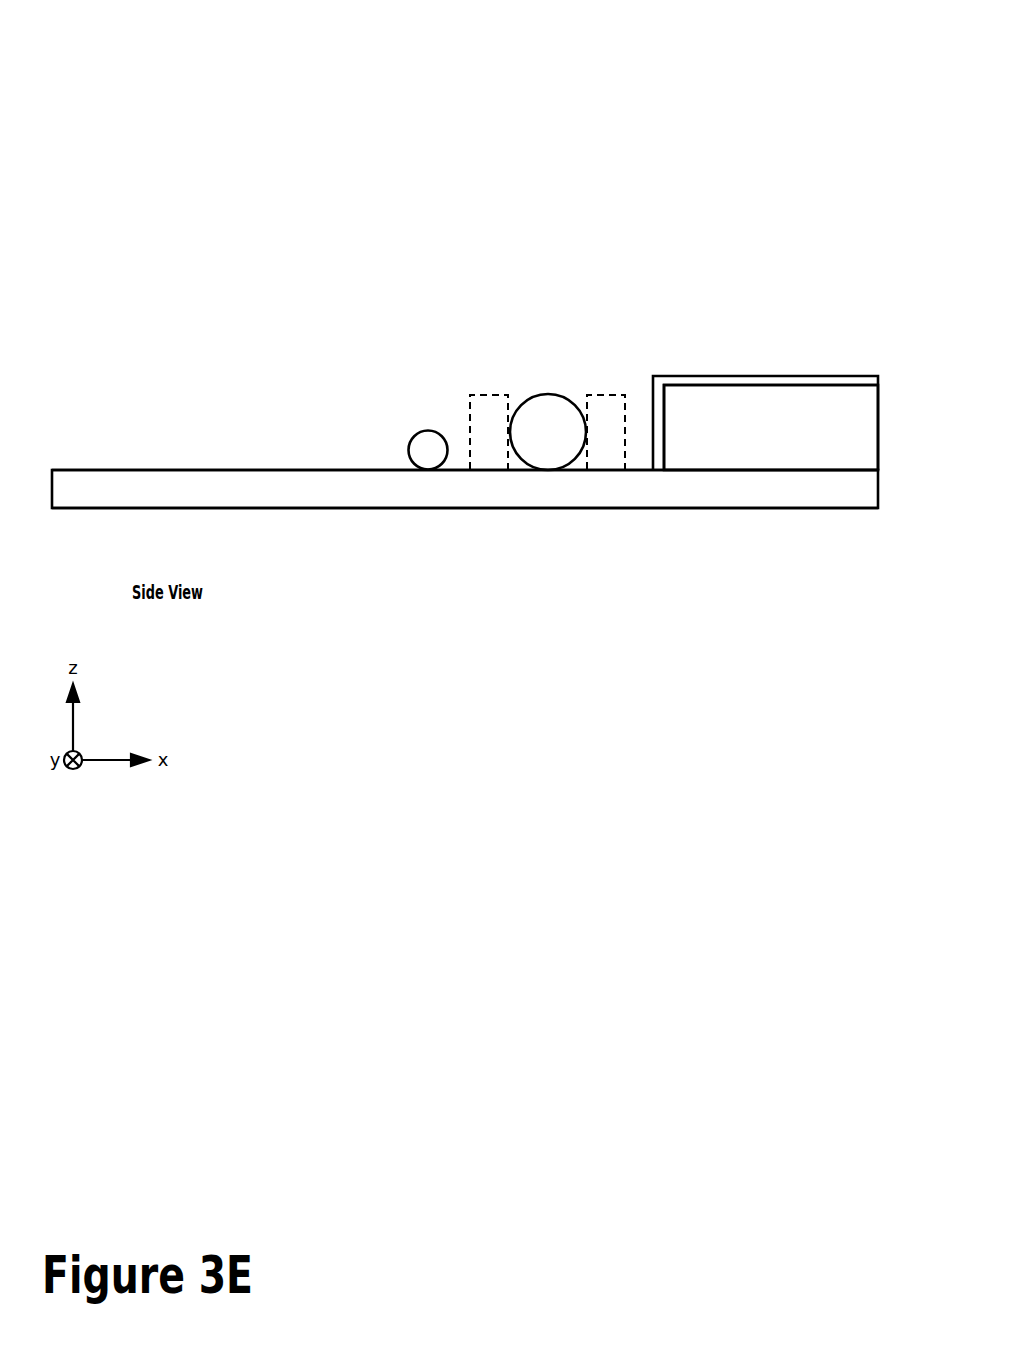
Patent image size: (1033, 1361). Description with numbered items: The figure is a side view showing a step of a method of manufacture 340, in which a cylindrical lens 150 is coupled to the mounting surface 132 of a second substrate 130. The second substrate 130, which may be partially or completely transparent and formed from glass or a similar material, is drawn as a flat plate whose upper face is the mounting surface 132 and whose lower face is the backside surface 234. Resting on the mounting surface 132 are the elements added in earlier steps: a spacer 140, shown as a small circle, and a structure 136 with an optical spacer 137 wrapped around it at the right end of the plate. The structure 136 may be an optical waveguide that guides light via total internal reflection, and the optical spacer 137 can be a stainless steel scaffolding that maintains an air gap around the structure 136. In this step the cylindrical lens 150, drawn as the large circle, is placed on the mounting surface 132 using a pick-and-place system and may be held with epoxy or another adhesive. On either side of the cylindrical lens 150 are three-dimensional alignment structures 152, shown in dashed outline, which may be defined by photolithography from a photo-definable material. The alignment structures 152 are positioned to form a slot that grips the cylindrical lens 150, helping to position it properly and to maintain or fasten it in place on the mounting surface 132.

The step of a method of manufacture 340 is at (861, 91).
The second substrate 130 is at (113, 500).
The mounting surface 132 is at (315, 468).
The backside surface 234 is at (240, 509).
The spacer 140 is at (422, 433).
The cylindrical lens 150 is at (540, 393).
The three-dimensional alignment structures 152 is at (469, 418).
The structure 136 is at (778, 435).
The optical spacer 137 is at (784, 375).